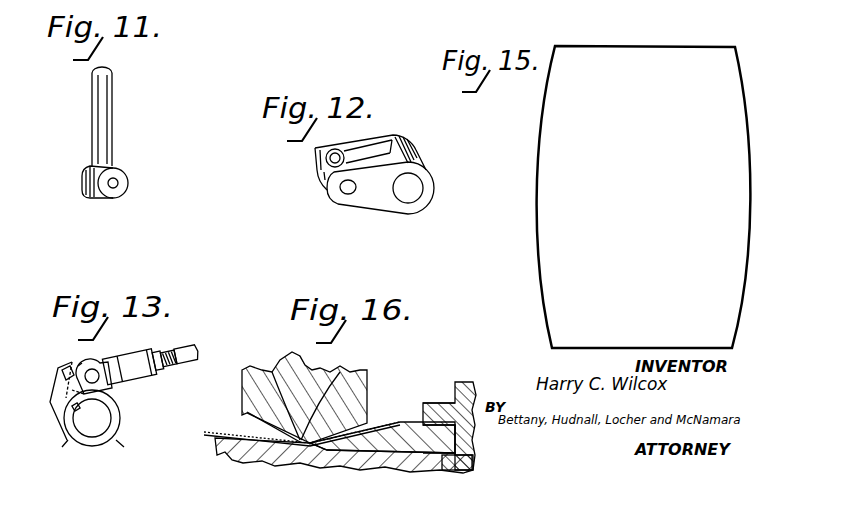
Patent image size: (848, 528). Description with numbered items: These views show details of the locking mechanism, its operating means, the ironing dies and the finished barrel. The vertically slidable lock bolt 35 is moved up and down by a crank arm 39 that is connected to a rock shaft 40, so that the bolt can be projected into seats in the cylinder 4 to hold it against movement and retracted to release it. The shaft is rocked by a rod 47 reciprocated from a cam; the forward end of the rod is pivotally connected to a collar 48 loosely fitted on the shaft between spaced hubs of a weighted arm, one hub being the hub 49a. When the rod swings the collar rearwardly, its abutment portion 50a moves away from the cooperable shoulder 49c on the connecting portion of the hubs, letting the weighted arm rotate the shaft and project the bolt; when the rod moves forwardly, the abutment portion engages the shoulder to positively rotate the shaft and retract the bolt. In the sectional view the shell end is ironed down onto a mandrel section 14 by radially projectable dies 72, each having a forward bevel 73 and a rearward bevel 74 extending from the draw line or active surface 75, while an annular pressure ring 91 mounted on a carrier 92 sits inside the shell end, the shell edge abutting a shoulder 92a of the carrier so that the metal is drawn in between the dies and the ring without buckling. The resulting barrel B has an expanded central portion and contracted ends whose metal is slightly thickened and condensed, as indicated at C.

In FIG. 11, the lock bolt 35 is at (104, 122).
In FIG. 12, the crank arm 39 is at (316, 164).
In FIG. 13, the rock shaft 40 is at (101, 424).
In FIG. 13, the rod 47 is at (177, 368).
In FIG. 13, the collar 48 is at (108, 390).
In FIG. 13, the hub 49a is at (65, 440).
In FIG. 13, the shoulder 49c is at (62, 372).
In FIG. 13, the abutment portion 50a is at (78, 368).
In FIG. 16, the mandrel section 14 is at (222, 461).
In FIG. 16, the die 72 is at (275, 392).
In FIG. 16, the forward bevel 73 is at (247, 412).
In FIG. 16, the rearward bevel 74 is at (348, 372).
In FIG. 16, the draw line 75 is at (288, 382).
In FIG. 16, the pressure ring 91 is at (417, 437).
In FIG. 16, the carrier 92 is at (443, 400).
In FIG. 16, the shoulder 92a is at (413, 437).
In FIG. 16, the cylinder 4 is at (473, 468).
In FIG. 15, the barrel B is at (538, 204).
In FIG. 15, the thickened end C is at (556, 50).